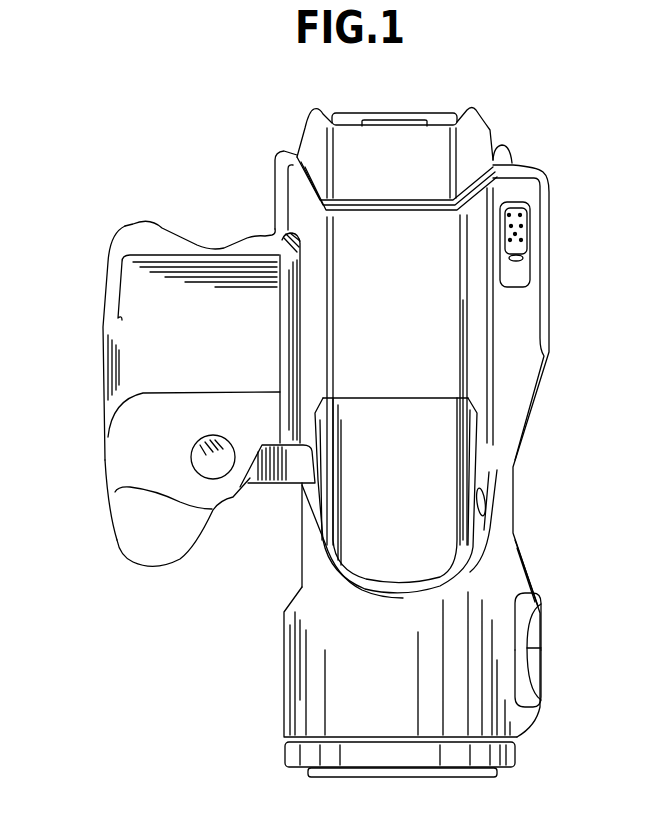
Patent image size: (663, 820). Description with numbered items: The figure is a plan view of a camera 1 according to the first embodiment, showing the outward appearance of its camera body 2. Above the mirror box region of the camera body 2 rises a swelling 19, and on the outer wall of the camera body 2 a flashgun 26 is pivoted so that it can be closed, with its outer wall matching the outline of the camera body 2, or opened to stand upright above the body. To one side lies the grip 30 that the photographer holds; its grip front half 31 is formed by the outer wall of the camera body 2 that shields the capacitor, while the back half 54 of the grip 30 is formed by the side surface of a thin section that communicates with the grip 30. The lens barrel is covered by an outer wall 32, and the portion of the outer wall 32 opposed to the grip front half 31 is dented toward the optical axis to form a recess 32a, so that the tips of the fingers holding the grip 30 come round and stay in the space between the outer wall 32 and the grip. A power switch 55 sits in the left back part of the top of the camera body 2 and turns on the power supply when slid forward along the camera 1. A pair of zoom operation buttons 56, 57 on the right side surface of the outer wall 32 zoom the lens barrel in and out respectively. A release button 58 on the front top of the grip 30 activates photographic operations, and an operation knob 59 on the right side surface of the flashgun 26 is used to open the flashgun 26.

The camera 1 is at (241, 190).
The camera body 2 is at (547, 551).
The swelling 19 is at (348, 157).
The flashgun 26 is at (360, 540).
The grip 30 is at (101, 435).
The grip front half 31 is at (157, 570).
The outer wall of the lens barrel 32 is at (302, 700).
The recess 32a is at (300, 543).
The back half of the grip 54 is at (150, 222).
The power switch 55 is at (520, 247).
The zoom operation button 56 is at (533, 668).
The zoom operation button 57 is at (530, 633).
The release button 58 is at (216, 460).
The operation knob 59 is at (487, 505).